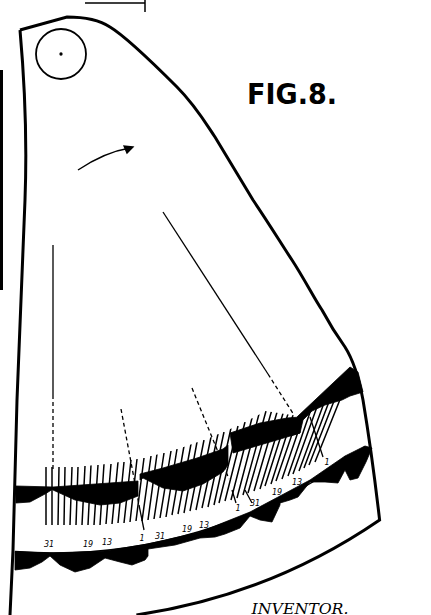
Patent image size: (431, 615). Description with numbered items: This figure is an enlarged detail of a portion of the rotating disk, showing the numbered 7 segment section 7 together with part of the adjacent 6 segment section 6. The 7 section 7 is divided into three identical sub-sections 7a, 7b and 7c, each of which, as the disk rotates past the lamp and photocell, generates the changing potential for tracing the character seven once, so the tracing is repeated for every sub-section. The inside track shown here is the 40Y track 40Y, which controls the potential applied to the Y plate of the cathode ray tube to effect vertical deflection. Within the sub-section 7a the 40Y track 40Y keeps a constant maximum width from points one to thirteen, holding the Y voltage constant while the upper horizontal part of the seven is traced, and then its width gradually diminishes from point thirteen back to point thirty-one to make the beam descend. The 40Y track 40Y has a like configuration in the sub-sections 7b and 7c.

The 7 segment section 7 is at (238, 337).
The 7a sub-section 7a is at (265, 375).
The 7b sub-section 7b is at (130, 430).
The 7c sub-section 7c is at (126, 430).
The 40Y track 40Y is at (338, 400).
The 6 segment section 6 is at (193, 521).